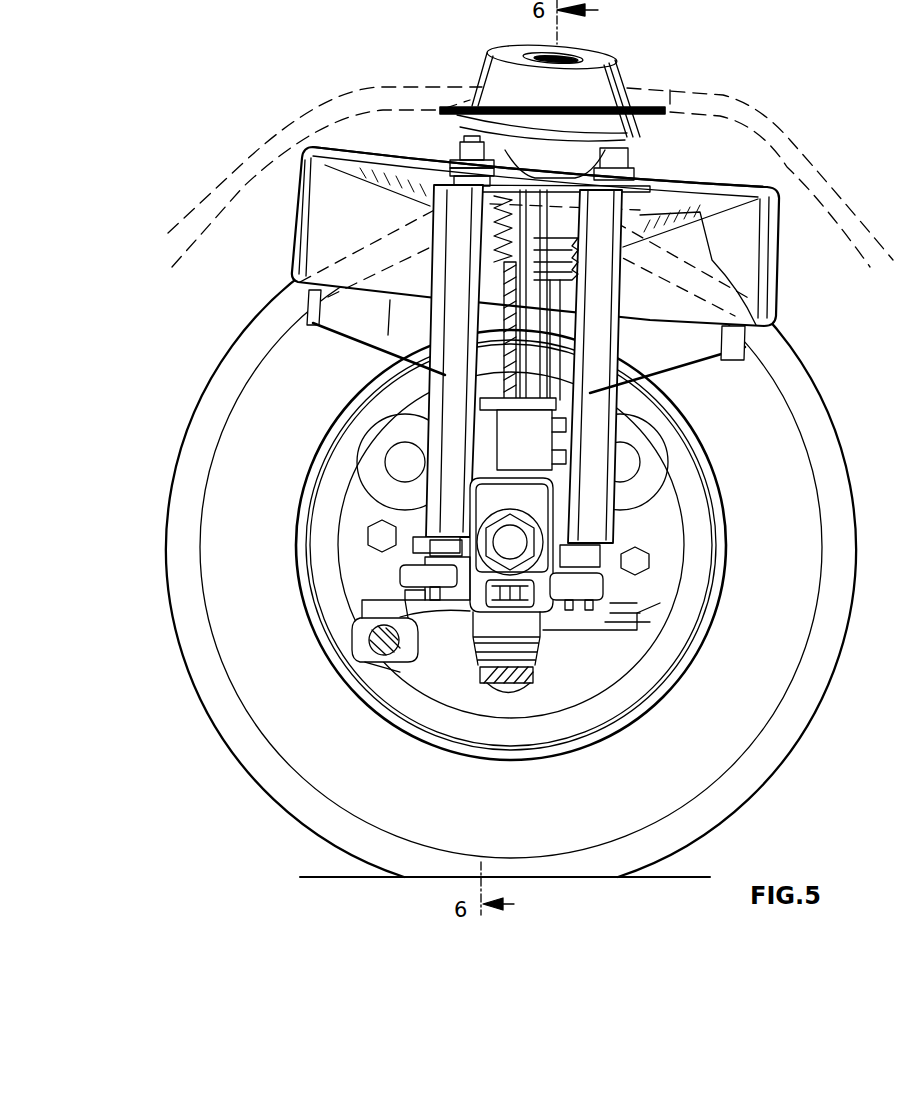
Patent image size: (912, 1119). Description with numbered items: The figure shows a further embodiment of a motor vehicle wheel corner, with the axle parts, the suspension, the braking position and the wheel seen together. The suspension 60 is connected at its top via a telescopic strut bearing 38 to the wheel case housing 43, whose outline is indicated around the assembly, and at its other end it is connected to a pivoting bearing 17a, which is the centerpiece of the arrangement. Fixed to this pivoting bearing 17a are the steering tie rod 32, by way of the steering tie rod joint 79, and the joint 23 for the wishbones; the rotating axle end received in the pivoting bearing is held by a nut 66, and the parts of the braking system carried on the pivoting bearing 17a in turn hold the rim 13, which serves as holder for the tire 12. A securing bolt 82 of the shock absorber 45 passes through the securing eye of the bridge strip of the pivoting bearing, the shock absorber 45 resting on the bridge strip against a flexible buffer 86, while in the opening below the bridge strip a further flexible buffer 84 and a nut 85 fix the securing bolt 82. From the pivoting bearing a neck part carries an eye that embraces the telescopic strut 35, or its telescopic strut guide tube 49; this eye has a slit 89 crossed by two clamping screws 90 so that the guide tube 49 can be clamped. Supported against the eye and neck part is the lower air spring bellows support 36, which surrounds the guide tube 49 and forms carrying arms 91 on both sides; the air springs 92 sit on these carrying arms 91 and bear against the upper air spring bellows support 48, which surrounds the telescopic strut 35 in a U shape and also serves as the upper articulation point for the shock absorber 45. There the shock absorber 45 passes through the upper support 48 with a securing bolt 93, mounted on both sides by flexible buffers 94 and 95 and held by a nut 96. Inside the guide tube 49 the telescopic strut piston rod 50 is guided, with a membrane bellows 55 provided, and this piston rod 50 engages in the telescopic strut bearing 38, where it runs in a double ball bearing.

The tires 12 is at (800, 392).
The rim 13 is at (706, 604).
The pivoting bearing 17a is at (655, 606).
The joint 23 is at (533, 676).
The steering tie rod 32 is at (362, 654).
The telescopic strut 35 is at (566, 292).
The lower air spring bellows support 36 is at (690, 376).
The telescopic strut bearing 38 is at (624, 74).
The wheel case housing 43 is at (797, 168).
The shock absorber 45 is at (450, 378).
The upper air spring bellows support 48 is at (672, 182).
The telescopic strut guide tube 49 is at (504, 296).
The telescopic strut piston rod 50 is at (500, 248).
The membrane bellows 55 is at (588, 240).
The suspension 60 is at (780, 283).
The nut 66 is at (490, 562).
The steering tie rod joint 79 is at (362, 640).
The securing bolt 82 is at (445, 520).
The flexible buffer 84 is at (430, 576).
The nut 85 is at (420, 596).
The flexible buffer 86 is at (608, 556).
The slit 89 is at (530, 456).
The clamping screws 90 is at (520, 434).
The carrying arms 91 is at (383, 338).
The air springs 92 is at (770, 255).
The securing bolt 93 is at (460, 170).
The flexible buffer 94 is at (442, 188).
The flexible buffer 95 is at (480, 172).
The nut 96 is at (470, 142).